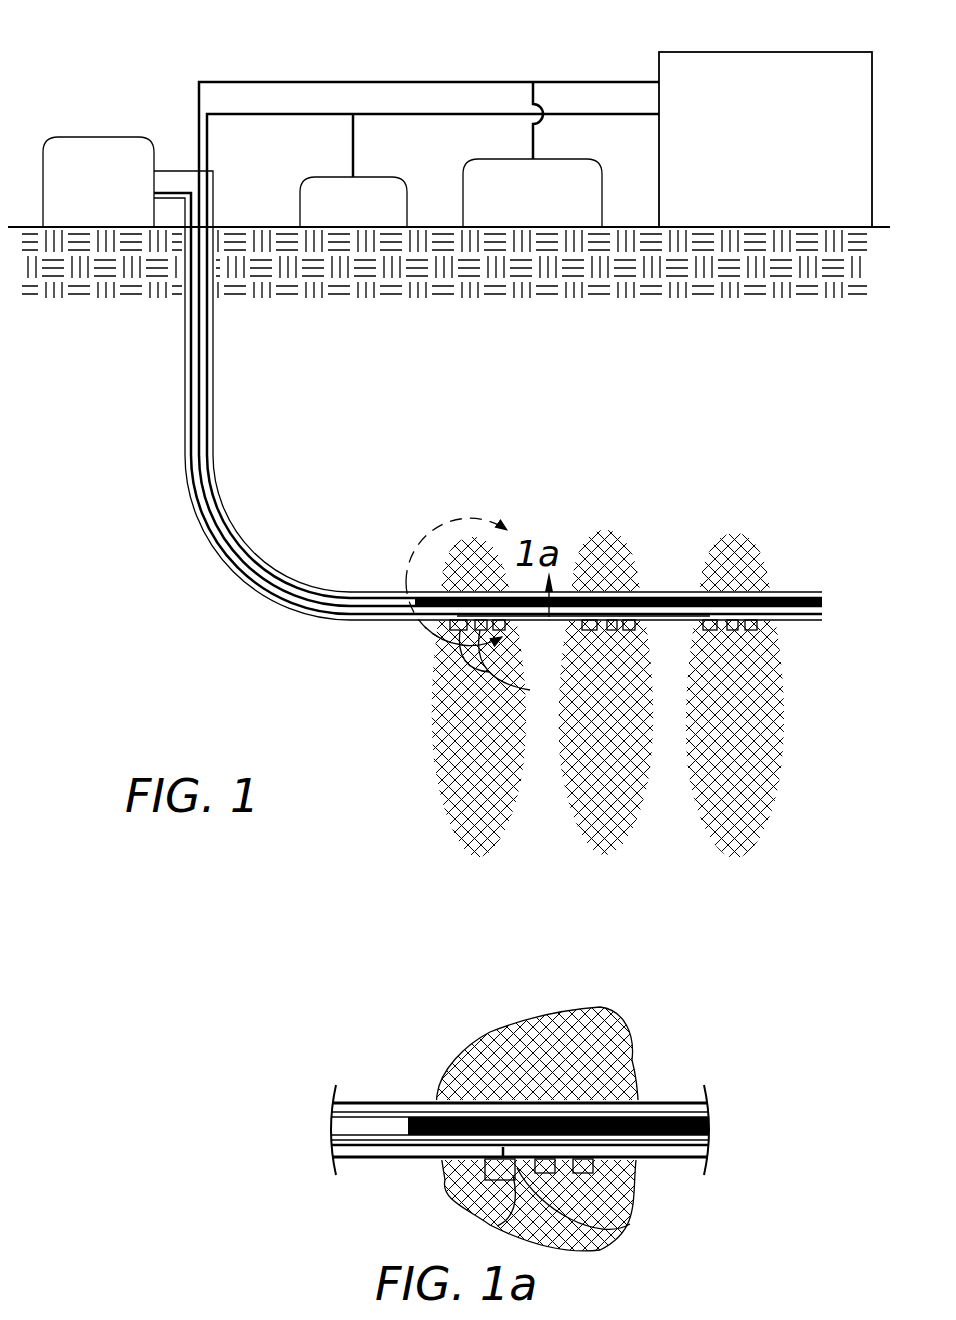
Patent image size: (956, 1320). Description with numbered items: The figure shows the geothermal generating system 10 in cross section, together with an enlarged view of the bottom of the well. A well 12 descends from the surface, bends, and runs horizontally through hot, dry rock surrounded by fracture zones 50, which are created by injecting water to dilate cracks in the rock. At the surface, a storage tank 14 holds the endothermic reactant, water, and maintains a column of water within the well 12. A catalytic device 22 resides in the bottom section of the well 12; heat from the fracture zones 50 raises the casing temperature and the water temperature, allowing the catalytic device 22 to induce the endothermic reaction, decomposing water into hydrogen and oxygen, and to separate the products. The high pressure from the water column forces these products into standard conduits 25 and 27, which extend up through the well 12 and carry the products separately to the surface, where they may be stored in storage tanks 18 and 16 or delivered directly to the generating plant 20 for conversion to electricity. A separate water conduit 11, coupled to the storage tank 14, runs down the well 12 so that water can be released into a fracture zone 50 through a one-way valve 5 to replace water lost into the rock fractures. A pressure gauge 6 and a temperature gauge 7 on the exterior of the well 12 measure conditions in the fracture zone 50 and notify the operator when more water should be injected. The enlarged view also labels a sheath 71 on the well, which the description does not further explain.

In FIG. 1, the one-way valve 5 is at (463, 628).
In FIG. 1A, the one-way valve 5 is at (495, 1172).
In FIG. 1, the pressure gauge 6 is at (470, 650).
In FIG. 1A, the pressure gauge 6 is at (497, 1227).
In FIG. 1, the temperature gauge 7 is at (495, 640).
In FIG. 1A, the temperature gauge 7 is at (630, 1227).
In FIG. 1, the geothermal generating system 10 is at (145, 425).
In FIG. 1, the water conduit 11 is at (186, 366).
In FIG. 1, the well 12 is at (215, 315).
In FIG. 1A, the well 12 is at (392, 1103).
In FIG. 1, the storage tank 14 is at (95, 137).
In FIG. 1, the storage tank 16 is at (372, 177).
In FIG. 1, the storage tank 18 is at (566, 159).
In FIG. 1, the generating plant 20 is at (720, 52).
In FIG. 1, the catalytic device 22 is at (668, 597).
In FIG. 1A, the catalytic device 22 is at (657, 1112).
In FIG. 1, the standard conduit 25 is at (366, 82).
In FIG. 1A, the standard conduit 25 is at (362, 1150).
In FIG. 1, the standard conduit 27 is at (298, 114).
In FIG. 1A, the standard conduit 27 is at (365, 1112).
In FIG. 1, the fracture zone 50 is at (445, 765).
In FIG. 1A, the fracture zone 50 is at (585, 1025).
In FIG. 1A, the insulating sheath 71 is at (675, 1150).